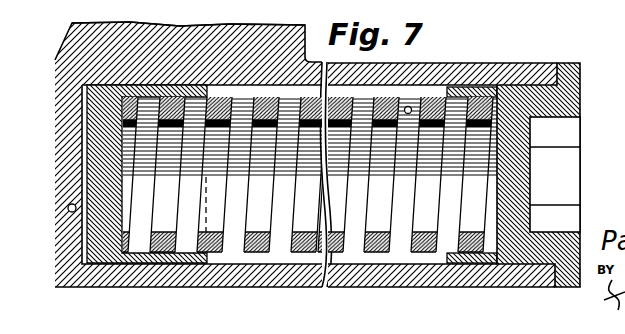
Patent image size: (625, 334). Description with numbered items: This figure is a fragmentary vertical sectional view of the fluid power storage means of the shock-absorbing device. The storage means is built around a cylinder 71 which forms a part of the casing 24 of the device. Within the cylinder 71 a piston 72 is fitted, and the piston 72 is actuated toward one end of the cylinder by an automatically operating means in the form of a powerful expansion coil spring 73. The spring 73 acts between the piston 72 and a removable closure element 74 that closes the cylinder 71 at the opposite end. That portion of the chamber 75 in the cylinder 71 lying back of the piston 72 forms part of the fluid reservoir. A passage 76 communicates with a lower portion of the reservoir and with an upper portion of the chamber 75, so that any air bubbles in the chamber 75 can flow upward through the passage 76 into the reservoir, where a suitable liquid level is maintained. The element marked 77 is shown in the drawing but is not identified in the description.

The casing 24 is at (156, 40).
The cylinder 71 is at (68, 117).
The piston 72 is at (103, 157).
The expansion coil spring 73 is at (383, 253).
The removable closure element 74 is at (555, 105).
The chamber 75 is at (282, 250).
The passage 76 is at (410, 106).
The pin 77 is at (68, 210).